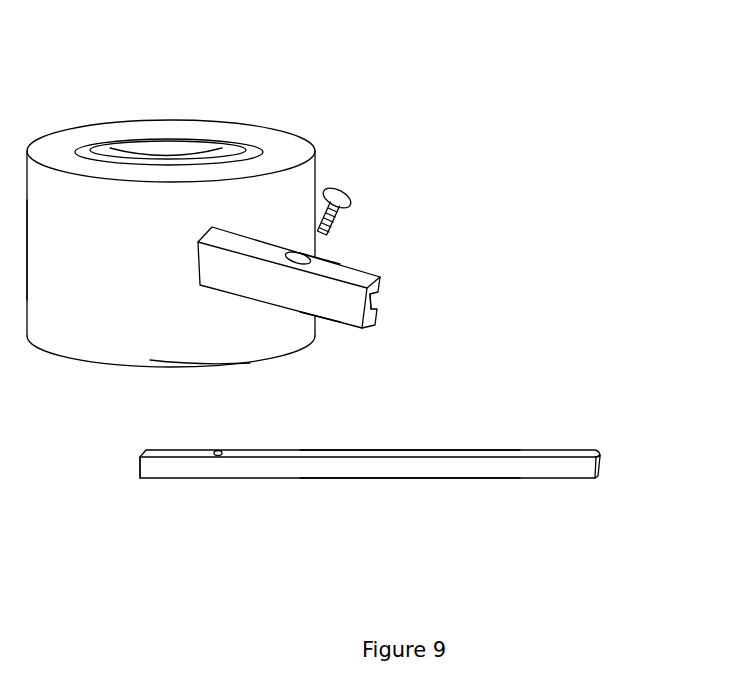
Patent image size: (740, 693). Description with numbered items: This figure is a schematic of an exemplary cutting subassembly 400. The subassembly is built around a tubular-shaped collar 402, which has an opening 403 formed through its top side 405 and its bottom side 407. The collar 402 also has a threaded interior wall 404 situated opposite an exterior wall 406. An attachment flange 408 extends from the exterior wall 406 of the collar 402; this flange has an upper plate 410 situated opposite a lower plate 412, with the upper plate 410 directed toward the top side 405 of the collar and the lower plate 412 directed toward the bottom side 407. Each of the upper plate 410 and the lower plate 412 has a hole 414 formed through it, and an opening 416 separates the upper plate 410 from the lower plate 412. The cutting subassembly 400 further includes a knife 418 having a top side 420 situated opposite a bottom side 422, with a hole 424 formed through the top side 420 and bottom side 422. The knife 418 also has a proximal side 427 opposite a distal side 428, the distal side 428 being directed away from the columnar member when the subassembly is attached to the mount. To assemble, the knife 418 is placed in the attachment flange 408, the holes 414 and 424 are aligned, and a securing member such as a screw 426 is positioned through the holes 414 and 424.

The cutting subassembly 400 is at (400, 66).
The collar 402 is at (303, 125).
The opening 403 is at (162, 150).
The threaded interior wall 404 is at (220, 148).
The top side 405 is at (93, 135).
The exterior wall 406 is at (77, 328).
The bottom side 407 is at (233, 363).
The attachment flange 408 is at (421, 253).
The upper plate 410 is at (363, 278).
The lower plate 412 is at (348, 332).
The hole 414 is at (320, 253).
The opening 416 is at (377, 298).
The knife 418 is at (463, 415).
The top side 420 is at (525, 457).
The bottom side 422 is at (495, 482).
The hole 424 is at (218, 457).
The screw 426 is at (353, 190).
The proximal side 427 is at (138, 467).
The distal side 428 is at (603, 462).